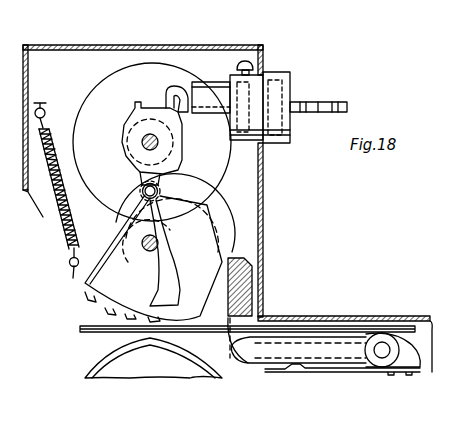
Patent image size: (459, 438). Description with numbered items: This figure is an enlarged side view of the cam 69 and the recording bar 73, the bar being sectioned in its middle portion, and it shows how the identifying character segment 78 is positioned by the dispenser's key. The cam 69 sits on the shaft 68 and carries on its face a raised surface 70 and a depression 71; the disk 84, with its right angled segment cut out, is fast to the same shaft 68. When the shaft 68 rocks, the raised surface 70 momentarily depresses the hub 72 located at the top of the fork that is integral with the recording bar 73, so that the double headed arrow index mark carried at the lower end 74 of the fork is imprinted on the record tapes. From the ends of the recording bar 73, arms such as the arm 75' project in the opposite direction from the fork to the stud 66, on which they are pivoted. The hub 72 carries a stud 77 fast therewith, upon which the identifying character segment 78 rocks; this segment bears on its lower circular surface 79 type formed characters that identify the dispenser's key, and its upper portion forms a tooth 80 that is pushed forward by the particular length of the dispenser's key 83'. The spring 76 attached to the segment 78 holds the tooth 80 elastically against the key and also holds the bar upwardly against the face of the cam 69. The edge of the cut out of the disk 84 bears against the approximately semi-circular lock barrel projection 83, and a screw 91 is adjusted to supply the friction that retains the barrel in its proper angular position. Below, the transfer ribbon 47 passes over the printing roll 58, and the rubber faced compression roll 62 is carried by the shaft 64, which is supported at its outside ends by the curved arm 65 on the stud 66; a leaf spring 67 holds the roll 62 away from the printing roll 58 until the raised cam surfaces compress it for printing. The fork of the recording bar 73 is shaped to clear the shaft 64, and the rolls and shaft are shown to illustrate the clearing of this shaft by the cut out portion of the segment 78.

The transfer ribbon 47 is at (82, 328).
The printing roll 58 is at (153, 358).
The compression roll 62 is at (221, 213).
The shaft 64 is at (145, 250).
The curved arm 65 is at (230, 360).
The stud 66 is at (381, 358).
The leaf spring 67 is at (330, 371).
The shaft 68 is at (142, 139).
The cam 69 is at (173, 135).
The raised surface 70 is at (178, 169).
The depression 71 is at (151, 107).
The hub 72 is at (140, 191).
The recording bar 73 is at (245, 292).
The lower end 74 is at (147, 300).
The arm 75' is at (310, 321).
The spring 76 is at (56, 131).
The stud 77 is at (160, 190).
The identifying character segment 78 is at (110, 226).
The lower circular surface 79 is at (82, 300).
The tooth 80 is at (170, 85).
The lock barrel projection 83 is at (248, 81).
The dispenser's key 83' is at (348, 103).
The disk 84 is at (105, 90).
The screw 91 is at (247, 62).